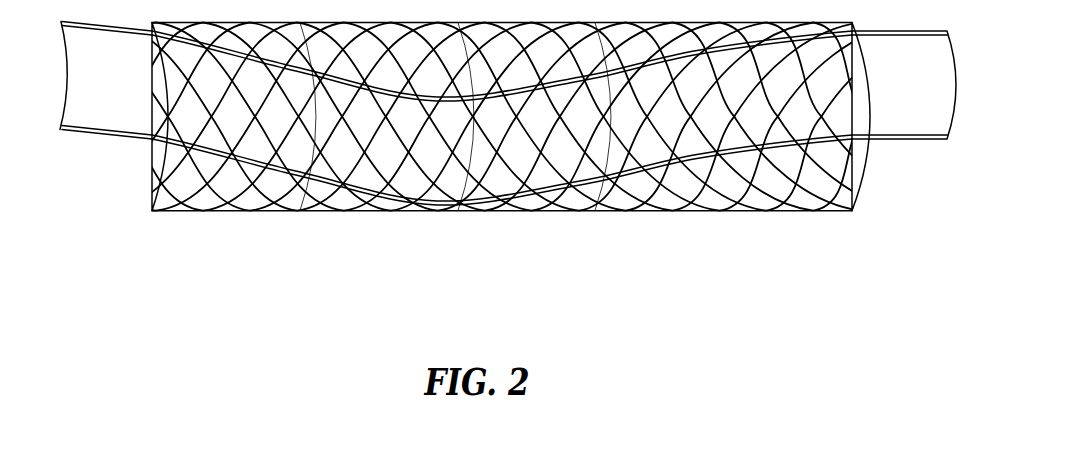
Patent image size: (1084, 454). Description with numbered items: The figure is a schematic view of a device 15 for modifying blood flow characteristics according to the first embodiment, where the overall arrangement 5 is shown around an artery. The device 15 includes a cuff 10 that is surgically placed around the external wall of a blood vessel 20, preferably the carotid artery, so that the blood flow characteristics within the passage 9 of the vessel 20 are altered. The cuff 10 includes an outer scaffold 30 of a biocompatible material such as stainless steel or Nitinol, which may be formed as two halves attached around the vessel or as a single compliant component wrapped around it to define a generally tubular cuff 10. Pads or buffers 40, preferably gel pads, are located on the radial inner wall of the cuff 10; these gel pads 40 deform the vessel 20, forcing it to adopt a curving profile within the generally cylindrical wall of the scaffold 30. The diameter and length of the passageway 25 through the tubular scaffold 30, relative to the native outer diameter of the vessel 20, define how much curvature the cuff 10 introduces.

The stent 5 is at (371, 236).
The passage 9 is at (112, 100).
The cuff 10 is at (641, 222).
The device 15 is at (873, 225).
The blood vessel 20 is at (899, 104).
The passageway 25 is at (150, 157).
The outer scaffold 30 is at (549, 222).
The gel pads 40 is at (759, 192).